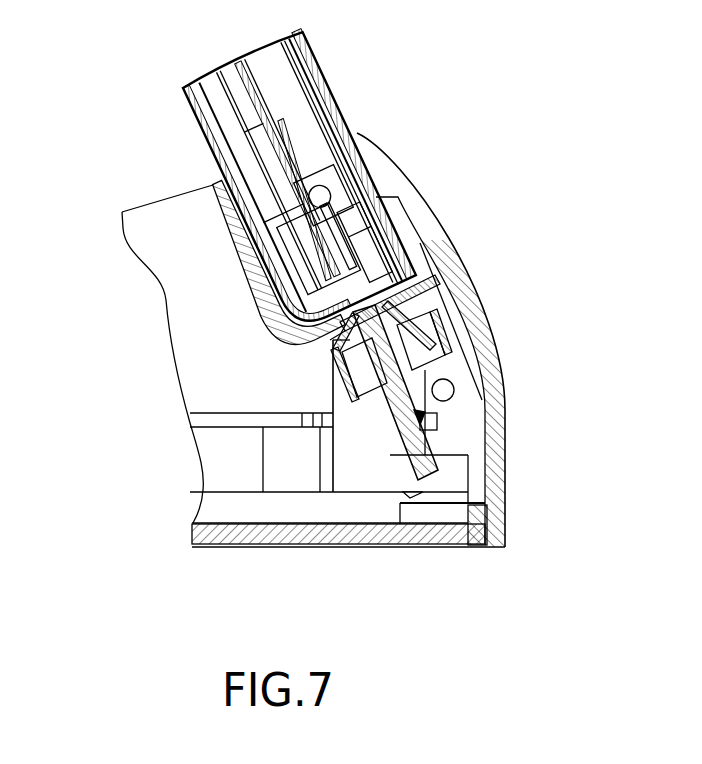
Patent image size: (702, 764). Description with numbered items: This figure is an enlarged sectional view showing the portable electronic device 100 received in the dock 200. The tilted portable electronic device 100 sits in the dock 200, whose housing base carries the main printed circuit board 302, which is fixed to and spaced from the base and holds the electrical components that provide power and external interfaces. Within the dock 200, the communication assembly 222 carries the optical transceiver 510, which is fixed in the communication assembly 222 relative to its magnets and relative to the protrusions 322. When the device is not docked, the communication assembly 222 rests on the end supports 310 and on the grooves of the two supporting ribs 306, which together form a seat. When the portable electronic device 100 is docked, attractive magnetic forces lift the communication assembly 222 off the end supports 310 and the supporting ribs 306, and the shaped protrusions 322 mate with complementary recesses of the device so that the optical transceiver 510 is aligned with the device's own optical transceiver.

The portable electronic device 100 is at (340, 80).
The dock 200 is at (204, 552).
The communication assembly 222 is at (437, 442).
The main printed circuit board 302 is at (397, 497).
The supporting ribs 306 is at (457, 518).
The end supports 310 is at (345, 482).
The protrusions 322 is at (397, 290).
The optical transceiver 510 is at (380, 315).